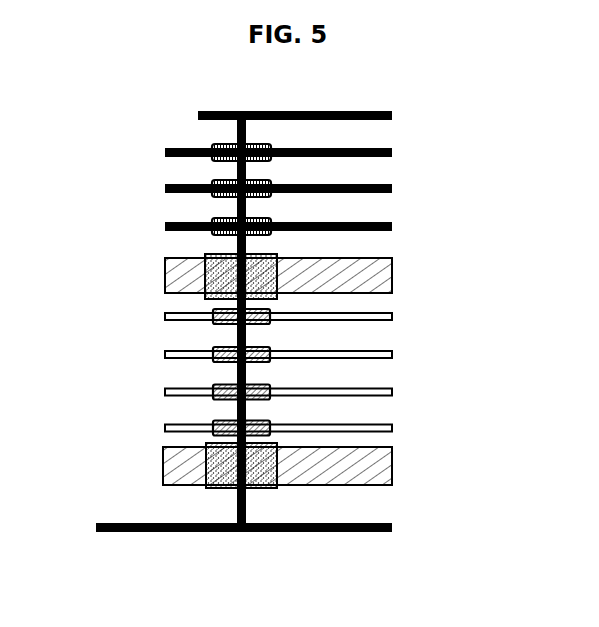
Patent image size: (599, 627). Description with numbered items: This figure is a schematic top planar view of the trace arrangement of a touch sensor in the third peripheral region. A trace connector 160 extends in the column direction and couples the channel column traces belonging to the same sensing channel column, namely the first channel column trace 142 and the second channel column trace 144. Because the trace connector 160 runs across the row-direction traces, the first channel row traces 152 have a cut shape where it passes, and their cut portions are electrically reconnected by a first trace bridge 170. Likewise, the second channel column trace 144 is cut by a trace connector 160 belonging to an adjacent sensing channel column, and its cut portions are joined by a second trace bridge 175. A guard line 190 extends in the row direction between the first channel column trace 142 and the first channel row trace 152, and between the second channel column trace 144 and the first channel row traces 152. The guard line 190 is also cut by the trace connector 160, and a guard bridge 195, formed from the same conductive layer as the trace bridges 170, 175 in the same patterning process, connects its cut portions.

The first channel column trace 142 is at (147, 532).
The second channel column trace 144 is at (393, 152).
The first channel row trace 152 is at (393, 315).
The trace connector 160 is at (247, 500).
The first trace bridge 170 is at (258, 386).
The second trace bridge 175 is at (220, 142).
The guard line 190 is at (393, 270).
The guard bridge 195 is at (218, 488).